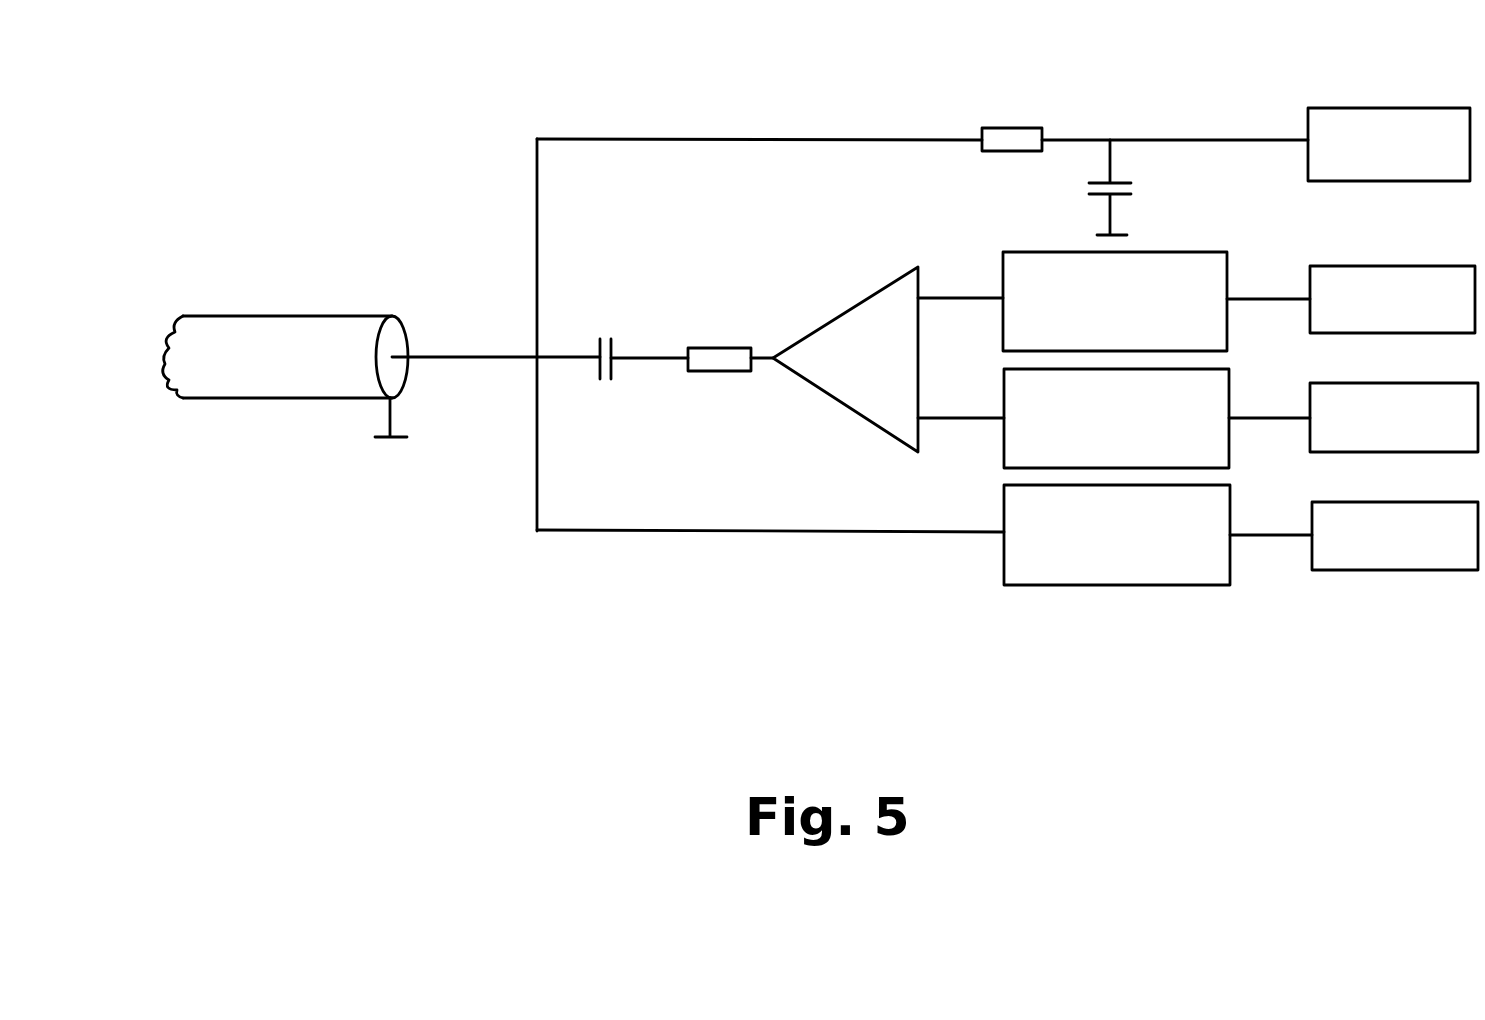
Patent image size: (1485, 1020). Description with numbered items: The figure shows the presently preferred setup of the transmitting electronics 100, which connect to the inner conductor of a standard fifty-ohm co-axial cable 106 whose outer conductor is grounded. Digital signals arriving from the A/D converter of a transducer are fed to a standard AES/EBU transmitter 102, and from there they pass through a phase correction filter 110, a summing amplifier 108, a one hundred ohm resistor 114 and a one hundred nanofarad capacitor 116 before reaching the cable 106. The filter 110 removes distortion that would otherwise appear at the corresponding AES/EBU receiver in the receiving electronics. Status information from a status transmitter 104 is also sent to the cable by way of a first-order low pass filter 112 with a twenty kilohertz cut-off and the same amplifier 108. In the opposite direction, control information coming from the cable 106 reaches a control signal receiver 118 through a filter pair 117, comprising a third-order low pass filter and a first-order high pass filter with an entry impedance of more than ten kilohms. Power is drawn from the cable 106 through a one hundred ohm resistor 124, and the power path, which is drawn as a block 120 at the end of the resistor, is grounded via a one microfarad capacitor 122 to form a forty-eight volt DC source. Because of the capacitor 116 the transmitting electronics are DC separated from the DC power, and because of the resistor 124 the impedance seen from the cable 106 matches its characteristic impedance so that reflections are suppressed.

The transmitting electronics 100 is at (446, 191).
The co-axial cable 106 is at (322, 306).
The capacitor 116 is at (630, 399).
The resistor 114 is at (738, 397).
The summing amplifier 108 is at (888, 359).
The phase correction filter 110 is at (1156, 301).
The low pass filter 112 is at (1157, 418).
The filter pair 117 is at (1158, 535).
The AES/EBU transmitter 102 is at (1392, 299).
The status transmitter 104 is at (1394, 417).
The control signal receiver 118 is at (1395, 536).
The resistor 124 is at (1058, 123).
The capacitor 122 is at (1143, 213).
The power supply/bias source 120 is at (1389, 144).